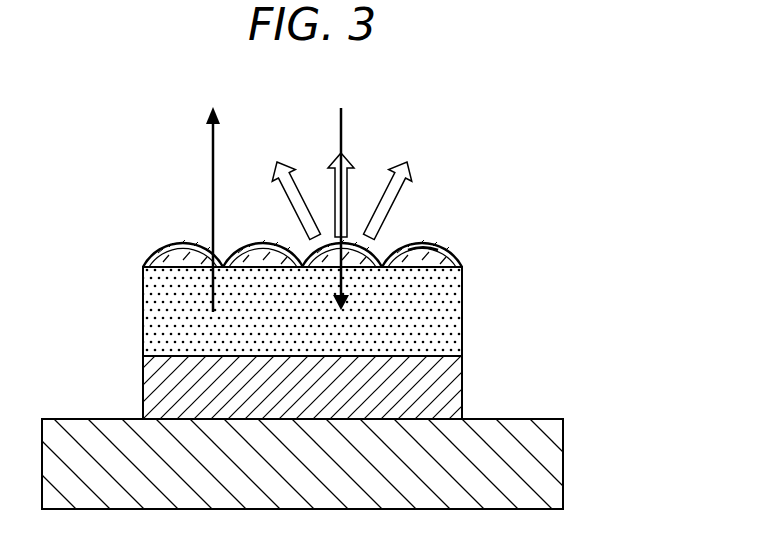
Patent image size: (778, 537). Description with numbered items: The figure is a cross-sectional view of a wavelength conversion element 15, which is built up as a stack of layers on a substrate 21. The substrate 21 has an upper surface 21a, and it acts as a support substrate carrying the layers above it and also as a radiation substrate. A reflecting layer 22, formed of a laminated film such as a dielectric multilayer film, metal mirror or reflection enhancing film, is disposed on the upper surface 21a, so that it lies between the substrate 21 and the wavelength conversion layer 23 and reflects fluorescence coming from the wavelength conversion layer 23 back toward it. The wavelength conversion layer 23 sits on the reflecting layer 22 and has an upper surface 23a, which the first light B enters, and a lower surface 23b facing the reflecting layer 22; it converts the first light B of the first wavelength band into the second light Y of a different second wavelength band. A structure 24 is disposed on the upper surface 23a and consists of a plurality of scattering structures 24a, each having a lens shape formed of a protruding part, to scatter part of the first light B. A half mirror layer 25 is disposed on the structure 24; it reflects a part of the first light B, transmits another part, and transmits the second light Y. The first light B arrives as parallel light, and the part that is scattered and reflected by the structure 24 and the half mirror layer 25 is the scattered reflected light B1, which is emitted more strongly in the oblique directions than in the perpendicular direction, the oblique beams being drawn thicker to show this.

The wavelength conversion element 15 is at (467, 177).
The substrate 21 is at (548, 447).
The upper surface 21a is at (533, 418).
The reflecting layer 22 is at (448, 377).
The wavelength conversion layer 23 is at (442, 305).
The upper surface 23a is at (167, 265).
The lower surface 23b is at (158, 360).
The structure 24 is at (384, 251).
The scattering structures 24a is at (438, 252).
The half mirror layer 25 is at (423, 247).
The second light Y is at (212, 152).
The first light B is at (334, 117).
The scattered reflected light B1 is at (293, 168).